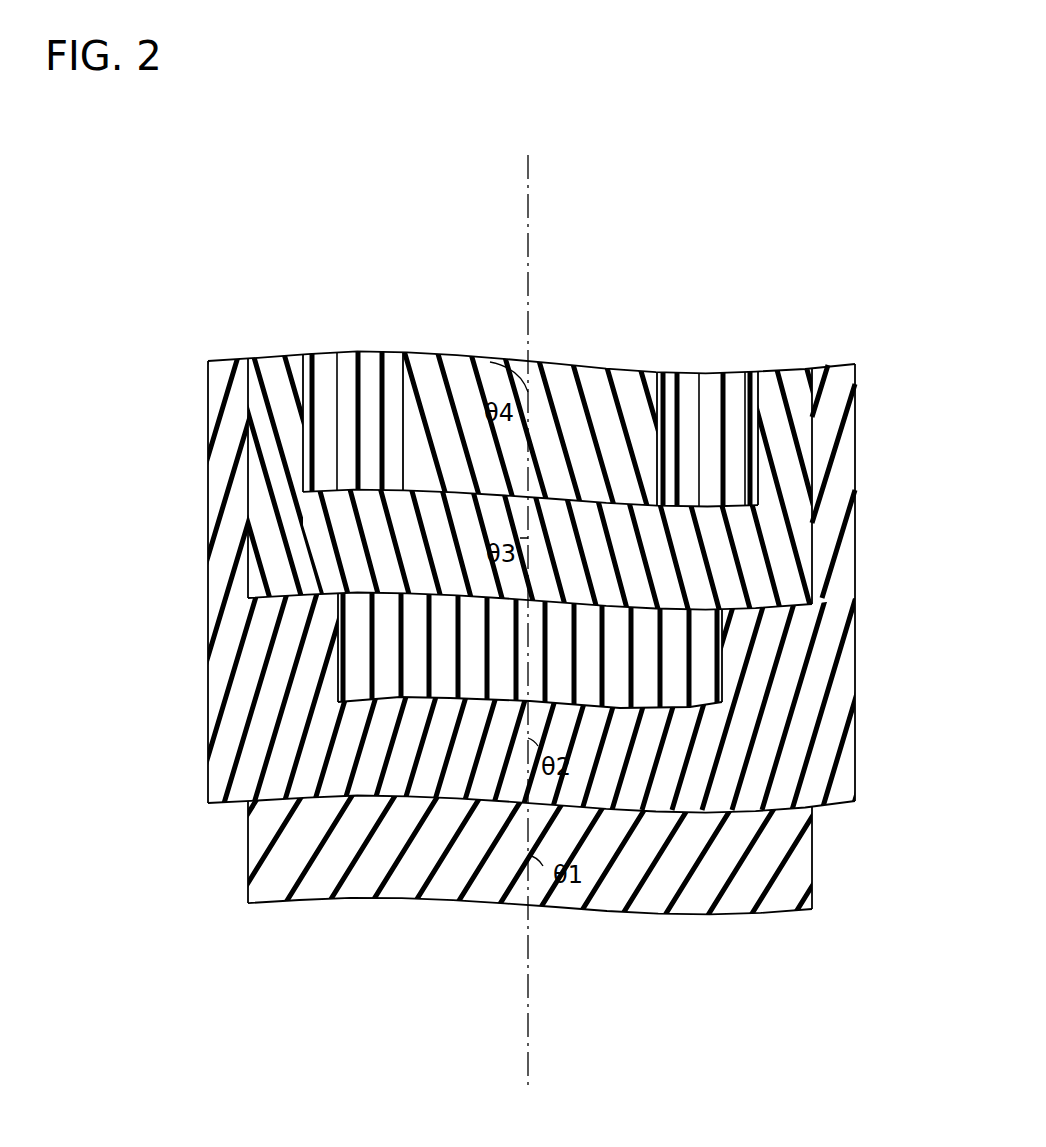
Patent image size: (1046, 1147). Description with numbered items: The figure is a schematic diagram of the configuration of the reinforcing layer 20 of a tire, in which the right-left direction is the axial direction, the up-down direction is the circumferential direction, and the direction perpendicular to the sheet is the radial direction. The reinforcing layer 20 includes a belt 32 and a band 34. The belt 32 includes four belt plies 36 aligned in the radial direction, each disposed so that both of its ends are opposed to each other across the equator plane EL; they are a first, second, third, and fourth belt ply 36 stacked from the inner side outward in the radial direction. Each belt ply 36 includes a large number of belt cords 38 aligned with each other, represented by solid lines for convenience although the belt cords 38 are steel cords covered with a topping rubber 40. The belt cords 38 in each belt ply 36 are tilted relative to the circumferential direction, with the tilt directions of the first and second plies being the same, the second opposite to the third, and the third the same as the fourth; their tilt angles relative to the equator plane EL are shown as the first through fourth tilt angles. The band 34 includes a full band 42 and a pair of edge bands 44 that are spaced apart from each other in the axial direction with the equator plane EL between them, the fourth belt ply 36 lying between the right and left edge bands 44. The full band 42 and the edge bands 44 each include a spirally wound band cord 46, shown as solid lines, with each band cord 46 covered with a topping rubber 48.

The reinforcing layer 20 is at (532, 595).
The belt 32 is at (532, 595).
The band 34 is at (540, 475).
The belt ply 36 is at (532, 612).
The belt cord 38 is at (488, 363).
The topping rubber 40 is at (462, 368).
The full band 42 is at (734, 653).
The edge band 44 is at (448, 470).
The band cord 46 is at (375, 367).
The topping rubber 48 is at (325, 352).
The equator plane EL is at (530, 177).